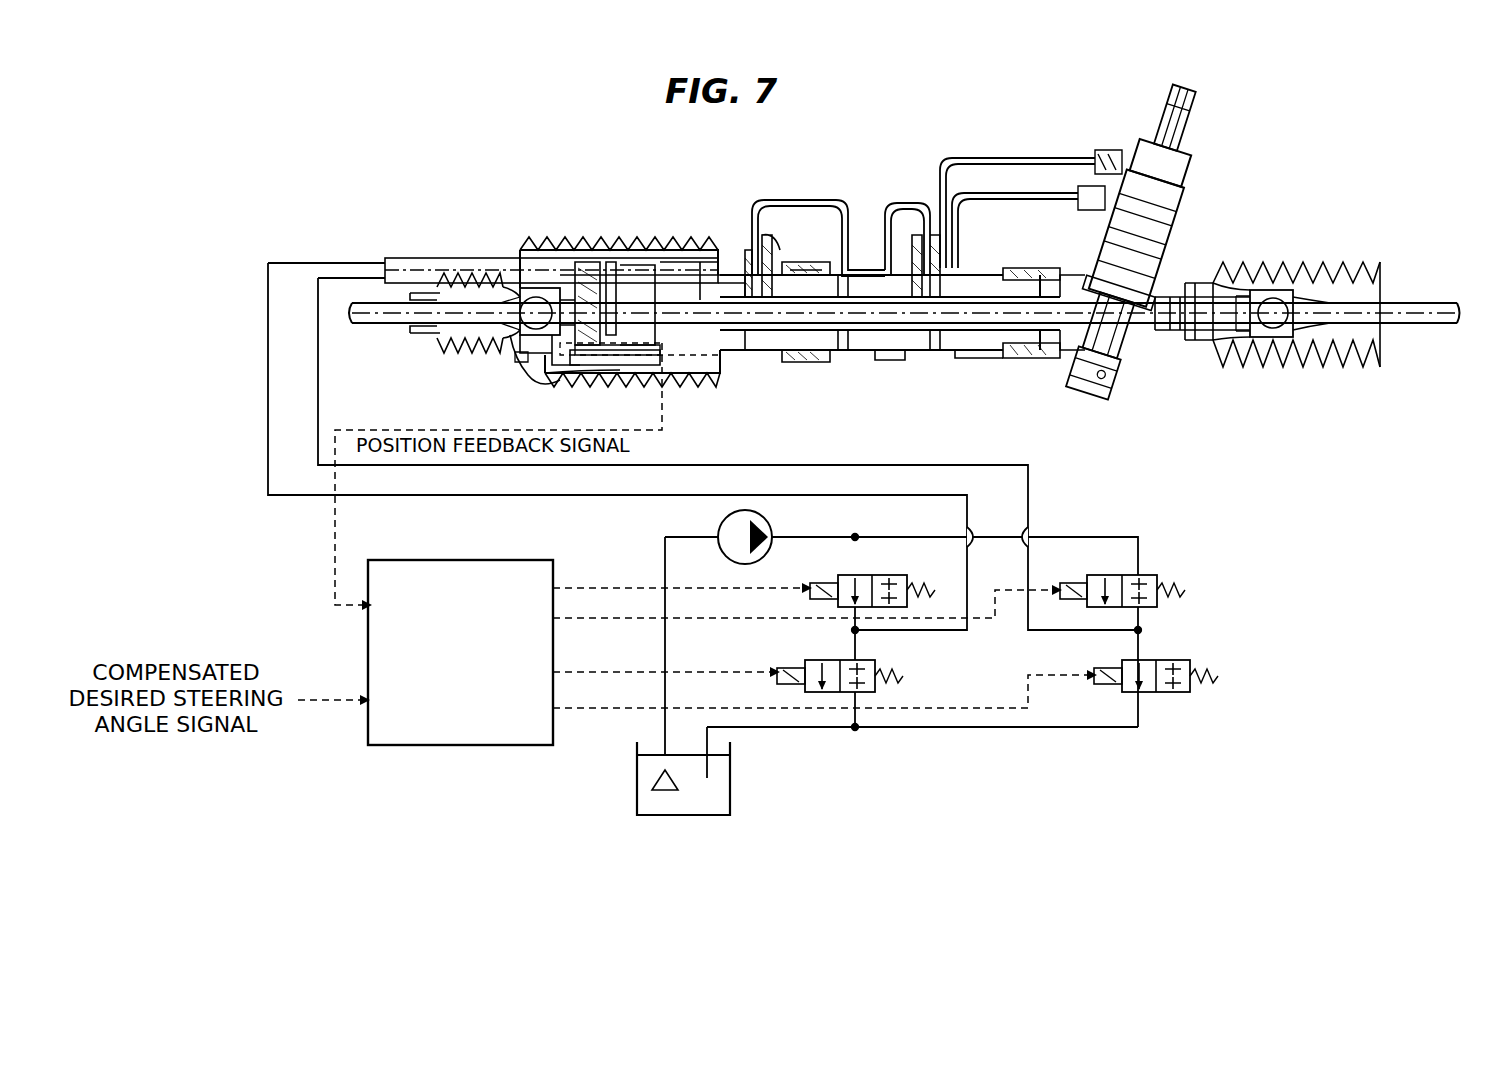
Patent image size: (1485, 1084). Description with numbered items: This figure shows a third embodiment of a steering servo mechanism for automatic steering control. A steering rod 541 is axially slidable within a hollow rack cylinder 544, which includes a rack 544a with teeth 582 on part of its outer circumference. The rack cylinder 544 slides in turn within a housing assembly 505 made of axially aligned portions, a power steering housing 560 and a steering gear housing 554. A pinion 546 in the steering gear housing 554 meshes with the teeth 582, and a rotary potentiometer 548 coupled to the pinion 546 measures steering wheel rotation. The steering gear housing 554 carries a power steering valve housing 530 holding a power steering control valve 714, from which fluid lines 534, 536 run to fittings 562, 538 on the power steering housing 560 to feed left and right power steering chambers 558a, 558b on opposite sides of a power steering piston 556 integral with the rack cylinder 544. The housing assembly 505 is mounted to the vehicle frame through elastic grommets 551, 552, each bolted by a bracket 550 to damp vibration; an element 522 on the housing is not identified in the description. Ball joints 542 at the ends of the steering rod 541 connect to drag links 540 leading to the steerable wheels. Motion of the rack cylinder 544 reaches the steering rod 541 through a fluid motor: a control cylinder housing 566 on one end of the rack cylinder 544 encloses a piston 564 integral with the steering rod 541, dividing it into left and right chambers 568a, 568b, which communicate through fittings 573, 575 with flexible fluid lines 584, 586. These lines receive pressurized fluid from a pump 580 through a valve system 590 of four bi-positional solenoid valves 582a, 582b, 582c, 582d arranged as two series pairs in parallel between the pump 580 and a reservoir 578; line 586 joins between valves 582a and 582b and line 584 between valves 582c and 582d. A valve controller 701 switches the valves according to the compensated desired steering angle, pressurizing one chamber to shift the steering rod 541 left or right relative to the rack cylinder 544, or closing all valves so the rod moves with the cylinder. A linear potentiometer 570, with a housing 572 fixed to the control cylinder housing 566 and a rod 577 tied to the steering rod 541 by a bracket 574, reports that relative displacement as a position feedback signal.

The housing assembly 505 is at (985, 358).
The bracket 522 is at (1000, 270).
The power steering valve housing 530 is at (1202, 143).
The fluid line 534 is at (1028, 160).
The fluid line 536 is at (1012, 198).
The fitting 538 is at (918, 240).
The drag link 540 is at (412, 303).
The steering rod 541 is at (882, 305).
The ball joint 542 is at (1315, 362).
The rack cylinder 544 is at (970, 300).
The rack 544a is at (1195, 340).
The pinion 546 is at (1139, 356).
The rotary potentiometer 548 is at (1116, 407).
The bracket 550 is at (1020, 360).
The elastic grommet 551 is at (798, 262).
The elastic grommet 552 is at (1062, 375).
The steering gear housing 554 is at (942, 355).
The power steering piston 556 is at (845, 350).
The left power steering chamber 558a is at (803, 362).
The right power steering chamber 558b is at (890, 360).
The power steering housing 560 is at (748, 355).
The fitting 562 is at (765, 235).
The piston 564 is at (648, 250).
The control cylinder housing 566 is at (580, 265).
The left chamber 568a is at (612, 262).
The right chamber 568b is at (650, 345).
The linear potentiometer 570 is at (640, 370).
The housing 572 is at (590, 372).
The fitting 573 is at (700, 255).
The bracket 574 is at (505, 352).
The fitting 575 is at (600, 262).
The rod 577 is at (525, 375).
The reservoir 578 is at (703, 806).
The pump 580 is at (768, 527).
The teeth 582 is at (1240, 345).
The bi-positional solenoid valve 582a is at (1156, 575).
The bi-positional solenoid valve 582b is at (1187, 660).
The bi-positional solenoid valve 582c is at (868, 660).
The bi-positional solenoid valve 582d is at (888, 575).
The flexible fluid line 584 is at (268, 322).
The flexible fluid line 586 is at (318, 352).
The valve system 590 is at (921, 735).
The valve controller 701 is at (510, 560).
The power steering control valve 714 is at (1173, 245).